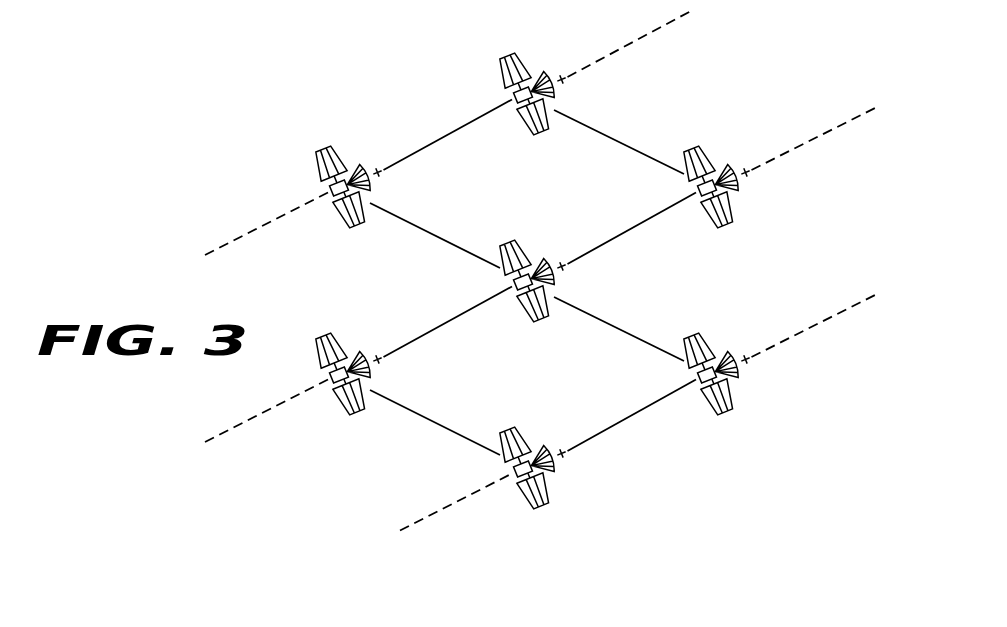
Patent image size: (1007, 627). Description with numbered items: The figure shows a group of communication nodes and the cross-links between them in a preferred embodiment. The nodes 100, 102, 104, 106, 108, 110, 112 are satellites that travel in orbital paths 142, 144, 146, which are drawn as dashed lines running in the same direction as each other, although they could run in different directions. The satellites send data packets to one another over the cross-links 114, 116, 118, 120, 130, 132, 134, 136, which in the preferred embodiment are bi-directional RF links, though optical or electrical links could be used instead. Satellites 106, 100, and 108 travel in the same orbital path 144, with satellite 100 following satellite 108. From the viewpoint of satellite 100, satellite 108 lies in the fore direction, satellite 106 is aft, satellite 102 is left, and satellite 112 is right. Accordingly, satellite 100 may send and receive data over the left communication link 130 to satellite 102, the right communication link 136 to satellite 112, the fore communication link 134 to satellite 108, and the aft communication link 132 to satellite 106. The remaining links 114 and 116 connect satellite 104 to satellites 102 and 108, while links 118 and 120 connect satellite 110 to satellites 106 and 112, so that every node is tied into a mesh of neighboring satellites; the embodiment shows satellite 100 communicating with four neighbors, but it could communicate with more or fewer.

The node 100 is at (543, 318).
The node 102 is at (359, 224).
The node 104 is at (543, 131).
The node 106 is at (359, 411).
The node 108 is at (727, 224).
The node 110 is at (543, 505).
The node 112 is at (727, 411).
The cross-link 114 is at (453, 131).
The cross-link 116 is at (617, 141).
The cross-link 118 is at (440, 425).
The cross-link 120 is at (625, 418).
The left communication link 130 is at (437, 234).
The aft communication link 132 is at (450, 320).
The fore communication link 134 is at (625, 231).
The right communication link 136 is at (612, 326).
The orbital path 142 is at (640, 37).
The orbital path 144 is at (817, 135).
The orbital path 146 is at (815, 323).